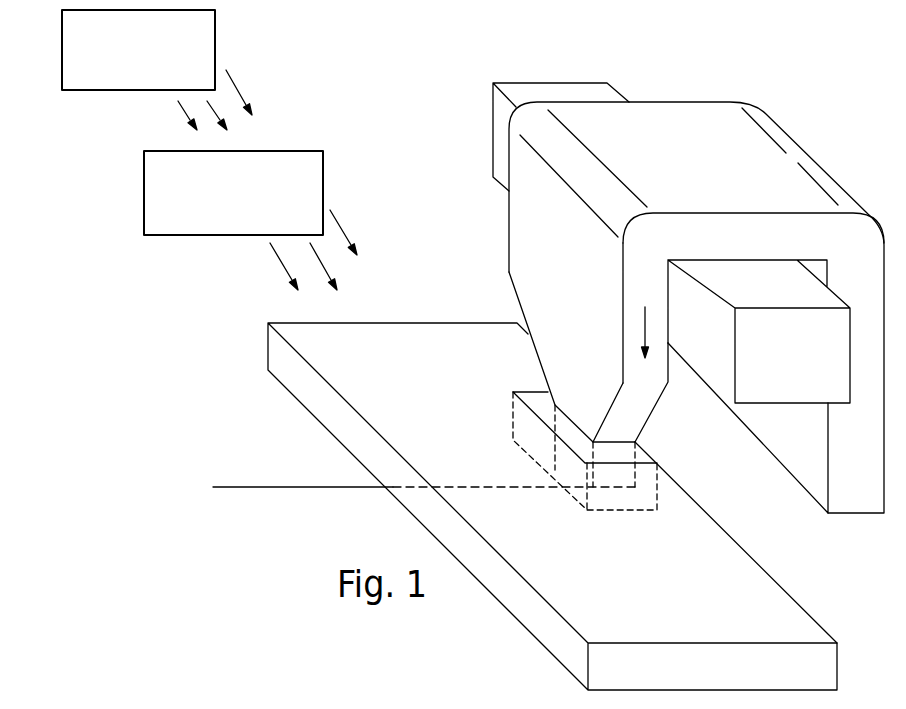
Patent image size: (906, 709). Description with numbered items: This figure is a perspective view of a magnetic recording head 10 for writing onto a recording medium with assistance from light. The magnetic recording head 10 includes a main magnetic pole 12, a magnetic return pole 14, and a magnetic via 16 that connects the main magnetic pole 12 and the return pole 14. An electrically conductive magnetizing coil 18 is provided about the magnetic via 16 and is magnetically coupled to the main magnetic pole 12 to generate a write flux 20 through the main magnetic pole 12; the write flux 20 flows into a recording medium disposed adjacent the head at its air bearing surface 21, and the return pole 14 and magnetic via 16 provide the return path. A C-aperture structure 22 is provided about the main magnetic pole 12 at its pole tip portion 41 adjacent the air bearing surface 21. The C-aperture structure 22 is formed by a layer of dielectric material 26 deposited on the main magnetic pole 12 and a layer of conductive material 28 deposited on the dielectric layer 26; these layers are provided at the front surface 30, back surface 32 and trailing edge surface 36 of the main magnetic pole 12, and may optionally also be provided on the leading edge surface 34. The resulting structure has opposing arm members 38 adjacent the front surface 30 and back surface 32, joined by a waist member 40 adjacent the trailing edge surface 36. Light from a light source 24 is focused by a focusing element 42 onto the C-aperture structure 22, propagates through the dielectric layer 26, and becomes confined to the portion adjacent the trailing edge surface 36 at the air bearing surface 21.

The magnetic recording head 10 is at (769, 80).
The main magnetic pole 12 is at (580, 299).
The magnetic return pole 14 is at (873, 484).
The magnetic via 16 is at (789, 167).
The electrically conductive magnetizing coil 18 is at (823, 371).
The write flux 20 is at (647, 328).
The air bearing surface 21 is at (235, 480).
The C-aperture structure 22 is at (245, 340).
The light source 24 is at (118, 92).
The layer of dielectric material 26 is at (537, 397).
The layer of conductive material 28 is at (712, 594).
The front surface 30 is at (640, 410).
The back surface 32 is at (500, 218).
The leading edge surface 34 is at (678, 383).
The trailing edge surface 36 is at (552, 343).
The opposing arm members 38 is at (503, 330).
The waist member 40 is at (427, 463).
The pole tip portion 41 is at (550, 450).
The focusing element 42 is at (290, 151).